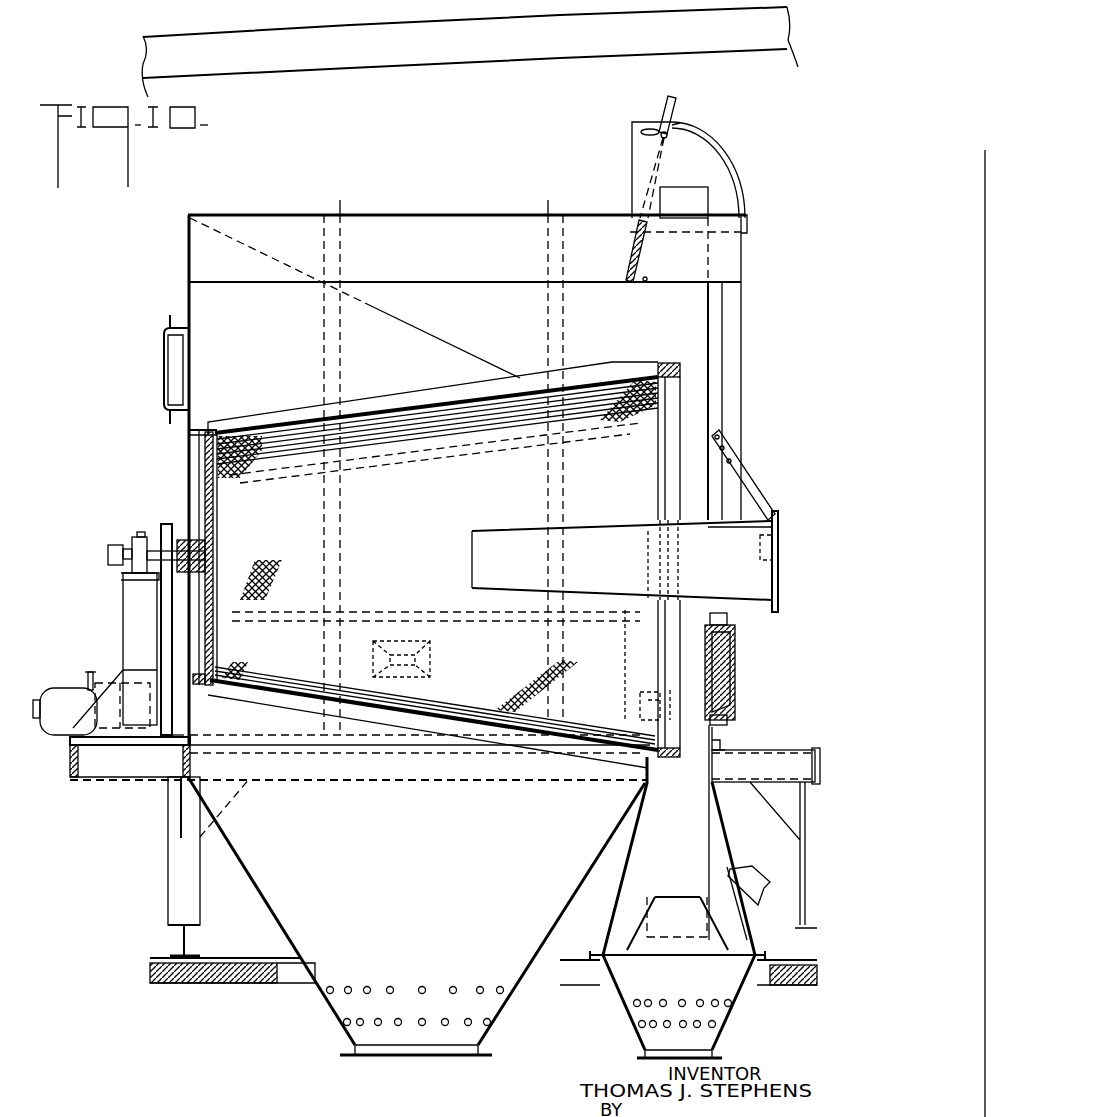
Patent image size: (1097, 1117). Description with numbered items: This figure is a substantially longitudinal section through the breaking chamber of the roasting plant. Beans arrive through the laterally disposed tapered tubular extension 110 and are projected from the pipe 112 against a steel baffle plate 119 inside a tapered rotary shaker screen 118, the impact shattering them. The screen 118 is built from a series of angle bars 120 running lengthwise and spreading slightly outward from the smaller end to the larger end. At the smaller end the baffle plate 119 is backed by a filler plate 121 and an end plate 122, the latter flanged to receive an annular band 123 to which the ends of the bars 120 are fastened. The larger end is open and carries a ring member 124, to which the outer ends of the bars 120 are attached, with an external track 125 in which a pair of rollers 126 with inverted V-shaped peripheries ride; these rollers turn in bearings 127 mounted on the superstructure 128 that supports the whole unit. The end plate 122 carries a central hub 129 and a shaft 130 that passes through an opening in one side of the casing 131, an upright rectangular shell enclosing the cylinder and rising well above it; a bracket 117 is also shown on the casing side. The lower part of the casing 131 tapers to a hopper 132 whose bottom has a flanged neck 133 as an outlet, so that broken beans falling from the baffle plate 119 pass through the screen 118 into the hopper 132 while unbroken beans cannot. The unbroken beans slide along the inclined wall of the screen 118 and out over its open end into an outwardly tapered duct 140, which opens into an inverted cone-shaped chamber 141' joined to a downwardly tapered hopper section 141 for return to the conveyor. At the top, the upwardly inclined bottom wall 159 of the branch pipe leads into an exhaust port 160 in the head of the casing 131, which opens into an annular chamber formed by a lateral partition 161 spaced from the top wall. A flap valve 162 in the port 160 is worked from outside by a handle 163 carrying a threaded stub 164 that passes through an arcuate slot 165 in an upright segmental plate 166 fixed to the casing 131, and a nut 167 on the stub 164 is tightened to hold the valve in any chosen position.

The tapered tubular extension 110 is at (753, 596).
The pipe 112 is at (498, 542).
The support bracket 117 is at (741, 473).
The shaker screen 118 is at (405, 413).
The baffle plate 119 is at (212, 515).
The angle bars 120 is at (291, 410).
The filler plate 121 is at (206, 623).
The end plate 122 is at (197, 650).
The annular band 123 is at (193, 682).
The ring member 124 is at (678, 363).
The track 125 is at (663, 366).
The rollers 126 is at (707, 776).
The bearings 127 is at (646, 696).
The superstructure 128 is at (773, 750).
The central hub 129 is at (187, 533).
The shaft 130 is at (200, 557).
The casing 131 is at (187, 459).
The hopper 132 is at (416, 916).
The flanged neck 133 is at (488, 1058).
The outwardly tapered duct 140 is at (700, 828).
The hopper section 141 is at (684, 977).
The inverted cone-shaped chamber 141' is at (617, 856).
The bottom wall 159 is at (472, 353).
The exhaust port 160 is at (500, 214).
The annular lateral partition 161 is at (630, 287).
The flap valve 162 is at (628, 258).
The handle 163 is at (678, 103).
The threaded stub 164 is at (662, 132).
The arcuate slot 165 is at (712, 160).
The segmental plate 166 is at (632, 162).
The nut 167 is at (681, 129).